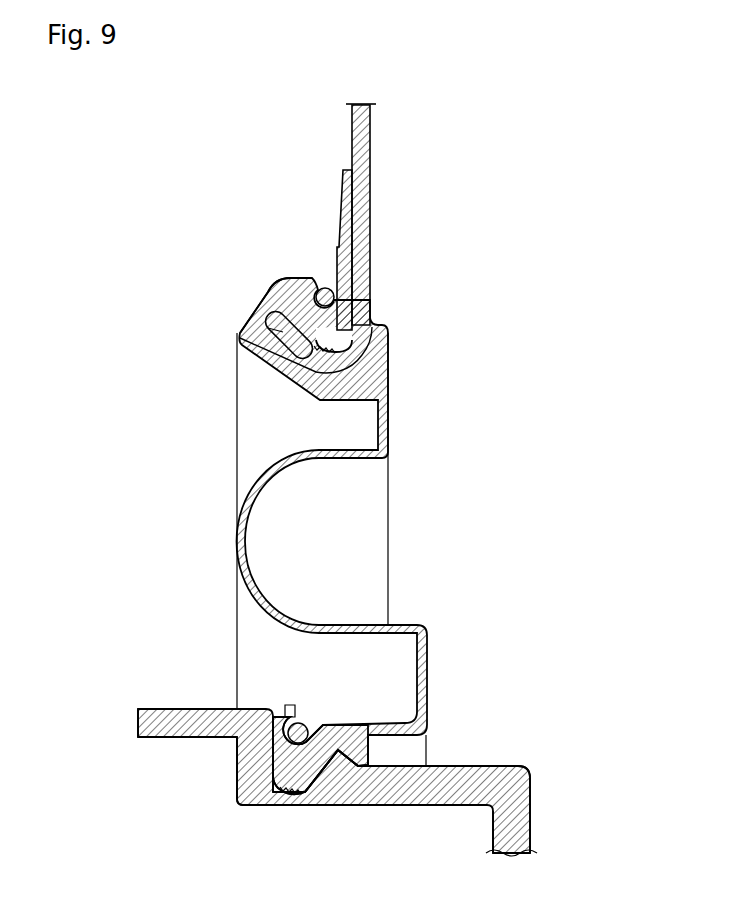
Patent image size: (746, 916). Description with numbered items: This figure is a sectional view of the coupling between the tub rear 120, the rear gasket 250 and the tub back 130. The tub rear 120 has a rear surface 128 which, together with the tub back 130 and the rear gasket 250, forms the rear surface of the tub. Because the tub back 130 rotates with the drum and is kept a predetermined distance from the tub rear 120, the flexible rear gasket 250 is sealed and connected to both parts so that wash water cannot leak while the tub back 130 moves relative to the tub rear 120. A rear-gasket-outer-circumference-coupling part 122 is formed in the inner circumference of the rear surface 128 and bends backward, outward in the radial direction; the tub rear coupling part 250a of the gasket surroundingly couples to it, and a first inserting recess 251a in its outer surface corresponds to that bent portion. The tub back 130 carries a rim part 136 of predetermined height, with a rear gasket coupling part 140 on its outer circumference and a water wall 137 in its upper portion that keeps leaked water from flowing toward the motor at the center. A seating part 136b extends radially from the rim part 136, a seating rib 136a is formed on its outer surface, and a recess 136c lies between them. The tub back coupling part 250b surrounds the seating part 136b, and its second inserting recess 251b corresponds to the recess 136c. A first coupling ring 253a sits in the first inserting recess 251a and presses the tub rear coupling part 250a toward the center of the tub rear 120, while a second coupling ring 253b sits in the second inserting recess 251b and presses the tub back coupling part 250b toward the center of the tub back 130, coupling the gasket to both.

The tub rear 120 is at (372, 155).
The rear surface 128 is at (360, 225).
The rear-gasket-outer-circumference-coupling part 122 is at (243, 318).
The rear gasket 250 is at (236, 531).
The tub rear coupling part 250a is at (270, 295).
The tub back coupling part 250b is at (270, 755).
The first inserting recess 251a is at (360, 315).
The second inserting recess 251b is at (275, 770).
The first coupling ring 253a is at (324, 288).
The second coupling ring 253b is at (278, 703).
The tub back 130 is at (538, 810).
The rim part 136 is at (440, 787).
The seating rib 136a is at (325, 772).
The seating part 136b is at (243, 748).
The recess 136c is at (240, 793).
The water wall 137 is at (138, 720).
The rear gasket coupling part 140 is at (262, 806).